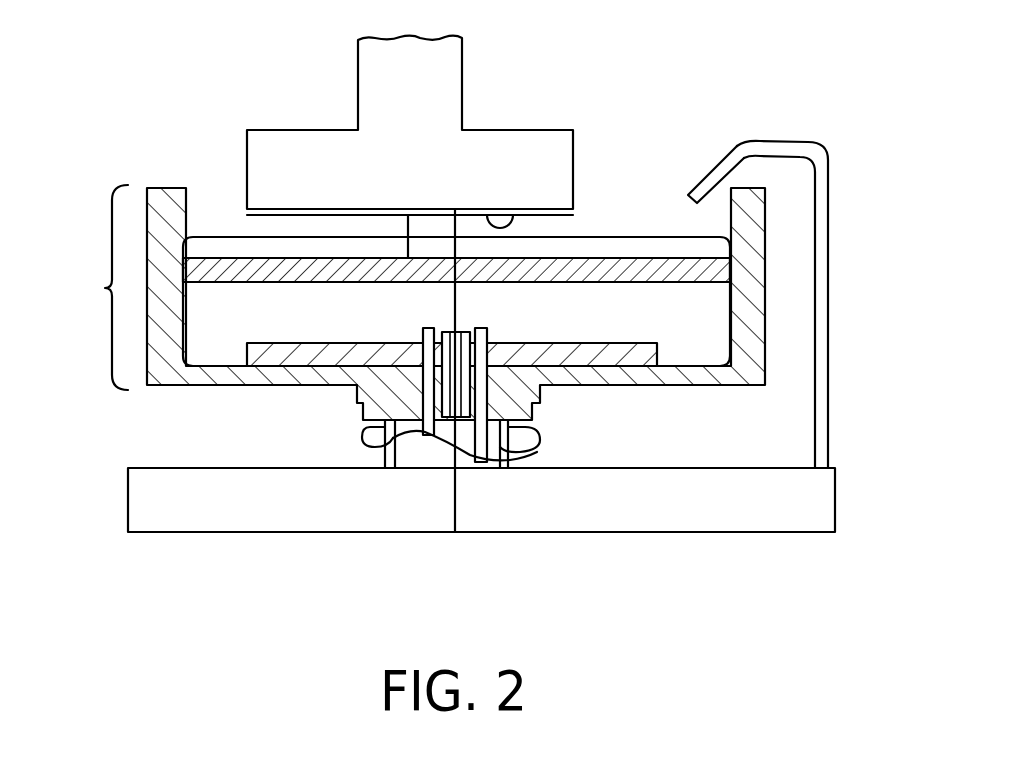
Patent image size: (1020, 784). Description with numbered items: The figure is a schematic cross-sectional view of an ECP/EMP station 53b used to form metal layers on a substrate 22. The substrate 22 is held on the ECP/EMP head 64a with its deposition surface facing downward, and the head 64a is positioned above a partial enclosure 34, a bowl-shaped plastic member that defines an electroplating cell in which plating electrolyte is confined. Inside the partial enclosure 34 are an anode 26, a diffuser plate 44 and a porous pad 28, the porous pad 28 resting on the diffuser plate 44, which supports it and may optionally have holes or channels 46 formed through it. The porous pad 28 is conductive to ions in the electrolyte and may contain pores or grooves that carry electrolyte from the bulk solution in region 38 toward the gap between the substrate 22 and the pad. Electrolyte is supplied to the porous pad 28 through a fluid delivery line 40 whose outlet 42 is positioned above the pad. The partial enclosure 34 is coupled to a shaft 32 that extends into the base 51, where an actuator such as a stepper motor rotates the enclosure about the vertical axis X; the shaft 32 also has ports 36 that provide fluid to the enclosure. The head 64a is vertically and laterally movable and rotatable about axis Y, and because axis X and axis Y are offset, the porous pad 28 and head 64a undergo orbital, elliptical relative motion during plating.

The substrate 22 is at (517, 209).
The anode 26 is at (280, 343).
The porous pad 28 is at (627, 236).
The shaft 32 is at (490, 460).
The partial enclosure 34 is at (742, 376).
The ports 36 is at (490, 338).
The region 38 is at (350, 329).
The fluid delivery line 40 is at (788, 143).
The outlet 42 is at (718, 172).
The diffuser plate 44 is at (675, 283).
The holes 46 is at (563, 283).
The base 51 is at (678, 518).
The processing unit 53b is at (86, 287).
The ECP/EMP head 64a is at (553, 99).
The x-axis X is at (450, 302).
The y-axis Y is at (408, 240).